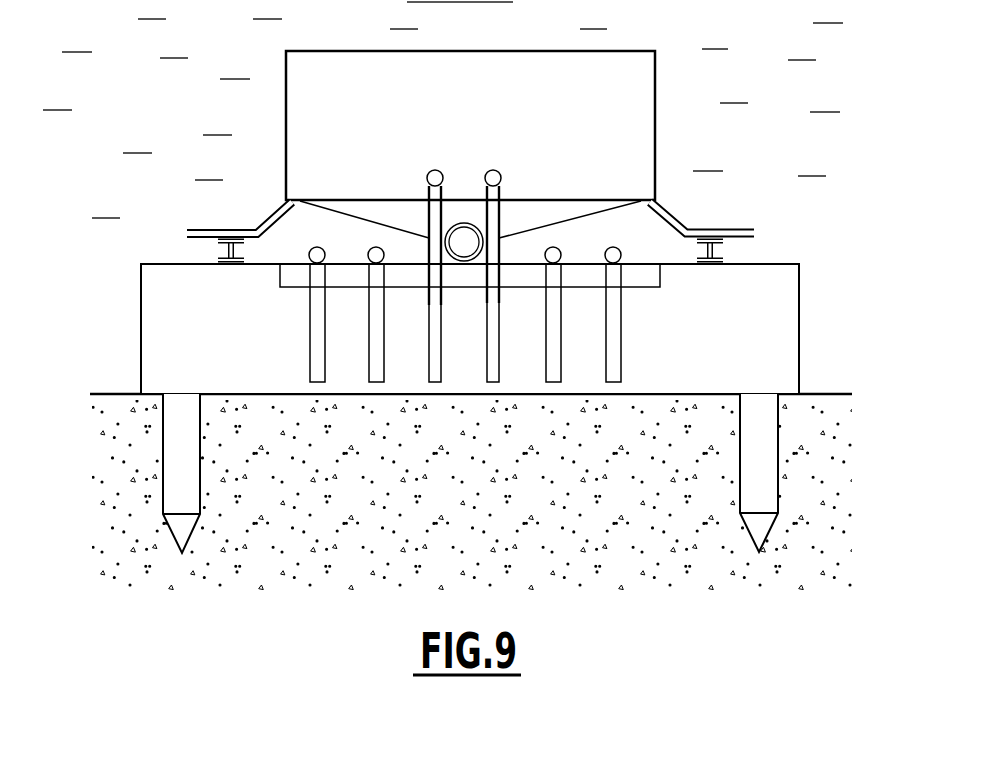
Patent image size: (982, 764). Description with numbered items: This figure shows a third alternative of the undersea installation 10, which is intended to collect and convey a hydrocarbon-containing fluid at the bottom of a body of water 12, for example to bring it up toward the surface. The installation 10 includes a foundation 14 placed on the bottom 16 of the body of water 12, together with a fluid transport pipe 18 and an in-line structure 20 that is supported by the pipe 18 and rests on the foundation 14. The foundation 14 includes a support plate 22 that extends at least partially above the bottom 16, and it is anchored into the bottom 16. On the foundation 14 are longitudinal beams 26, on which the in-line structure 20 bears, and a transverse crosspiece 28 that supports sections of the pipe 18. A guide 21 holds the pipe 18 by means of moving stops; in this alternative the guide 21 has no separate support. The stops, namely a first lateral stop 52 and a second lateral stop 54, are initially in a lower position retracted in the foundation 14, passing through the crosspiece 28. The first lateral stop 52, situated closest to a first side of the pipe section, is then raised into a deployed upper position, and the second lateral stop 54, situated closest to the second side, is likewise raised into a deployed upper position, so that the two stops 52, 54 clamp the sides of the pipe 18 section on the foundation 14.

The undersea installation 10 is at (448, 295).
The body of water 12 is at (443, 110).
The foundation 14 is at (450, 400).
The bottom of the body of water 16 is at (121, 402).
The fluid transport pipe 18 is at (464, 266).
The in-line structure 20 is at (469, 191).
The guide 21 is at (499, 110).
The support plate 22 is at (773, 325).
The longitudinal beams 26 is at (220, 250).
The transverse crosspiece 28 is at (638, 279).
The first lateral stop 52 is at (427, 208).
The second lateral stop 54 is at (503, 208).